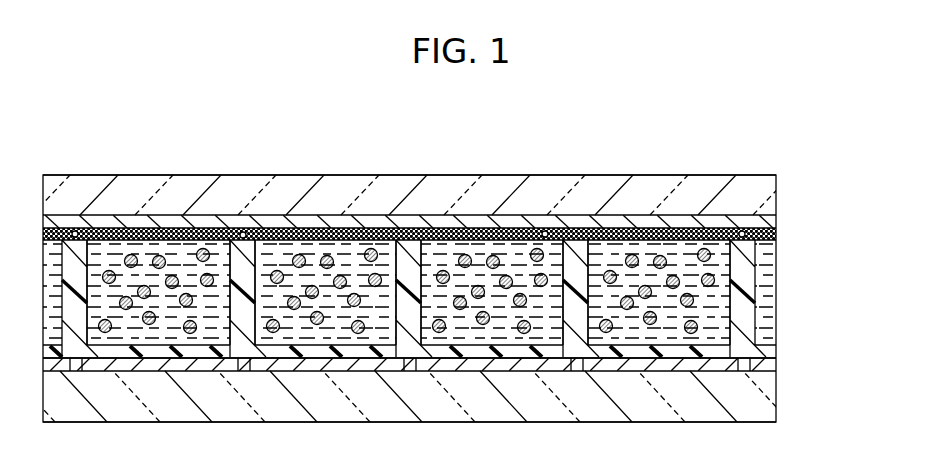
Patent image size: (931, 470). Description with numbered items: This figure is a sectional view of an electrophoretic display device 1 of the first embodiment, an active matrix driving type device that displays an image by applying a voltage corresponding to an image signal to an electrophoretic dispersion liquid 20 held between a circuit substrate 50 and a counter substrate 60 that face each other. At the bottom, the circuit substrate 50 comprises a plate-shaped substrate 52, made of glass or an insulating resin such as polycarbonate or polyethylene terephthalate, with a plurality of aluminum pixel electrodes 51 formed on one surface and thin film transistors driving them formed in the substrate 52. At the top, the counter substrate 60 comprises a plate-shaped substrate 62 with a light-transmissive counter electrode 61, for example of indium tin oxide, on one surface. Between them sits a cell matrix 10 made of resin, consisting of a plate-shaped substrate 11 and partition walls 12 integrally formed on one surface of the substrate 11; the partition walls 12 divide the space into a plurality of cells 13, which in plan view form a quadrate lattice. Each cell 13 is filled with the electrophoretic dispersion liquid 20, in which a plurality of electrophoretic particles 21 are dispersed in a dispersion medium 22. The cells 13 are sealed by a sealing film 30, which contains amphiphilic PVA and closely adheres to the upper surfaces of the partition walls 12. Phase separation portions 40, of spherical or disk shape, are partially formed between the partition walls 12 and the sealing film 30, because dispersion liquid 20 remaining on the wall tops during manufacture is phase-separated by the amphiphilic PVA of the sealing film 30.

The electrophoretic display device 1 is at (184, 97).
The cell matrix 10 is at (825, 270).
The substrate 11 is at (743, 350).
The partition walls 12 is at (742, 300).
The cells 13 is at (354, 250).
The electrophoretic dispersion liquid 20 is at (660, 123).
The electrophoretic particles 21 is at (660, 258).
The dispersion medium 22 is at (692, 258).
The sealing film 30 is at (760, 236).
The phase separation portions 40 is at (243, 233).
The circuit substrate 50 is at (825, 377).
The pixel electrodes 51 is at (728, 366).
The substrate 52 is at (752, 405).
The counter substrate 60 is at (823, 178).
The counter electrode 61 is at (760, 221).
The substrate 62 is at (760, 194).